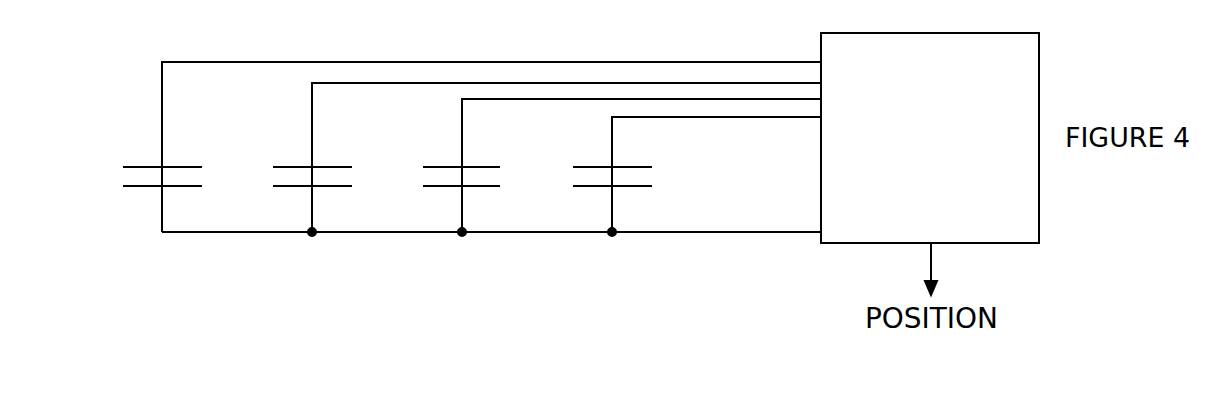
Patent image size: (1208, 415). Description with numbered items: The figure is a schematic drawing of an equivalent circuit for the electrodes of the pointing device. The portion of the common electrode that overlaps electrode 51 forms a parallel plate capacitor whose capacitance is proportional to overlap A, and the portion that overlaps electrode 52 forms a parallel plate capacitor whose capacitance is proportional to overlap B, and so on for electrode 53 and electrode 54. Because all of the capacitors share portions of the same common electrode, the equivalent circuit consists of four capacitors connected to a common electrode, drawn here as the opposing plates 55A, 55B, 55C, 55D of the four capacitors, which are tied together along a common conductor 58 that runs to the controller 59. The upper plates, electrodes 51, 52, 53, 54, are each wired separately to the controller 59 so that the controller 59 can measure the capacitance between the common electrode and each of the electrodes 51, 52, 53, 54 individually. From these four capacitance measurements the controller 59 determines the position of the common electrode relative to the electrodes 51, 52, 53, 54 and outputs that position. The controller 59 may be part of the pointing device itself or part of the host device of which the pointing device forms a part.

The electrode 51 is at (135, 165).
The electrode 52 is at (285, 165).
The electrode 53 is at (435, 165).
The electrode 54 is at (585, 165).
The portion of electrode 55 55A is at (132, 188).
The portion of electrode 55 55B is at (282, 188).
The portion of electrode 55 55C is at (432, 188).
The portion of electrode 55 55D is at (582, 188).
The common conductor line 58 is at (707, 232).
The controller 59 is at (947, 183).